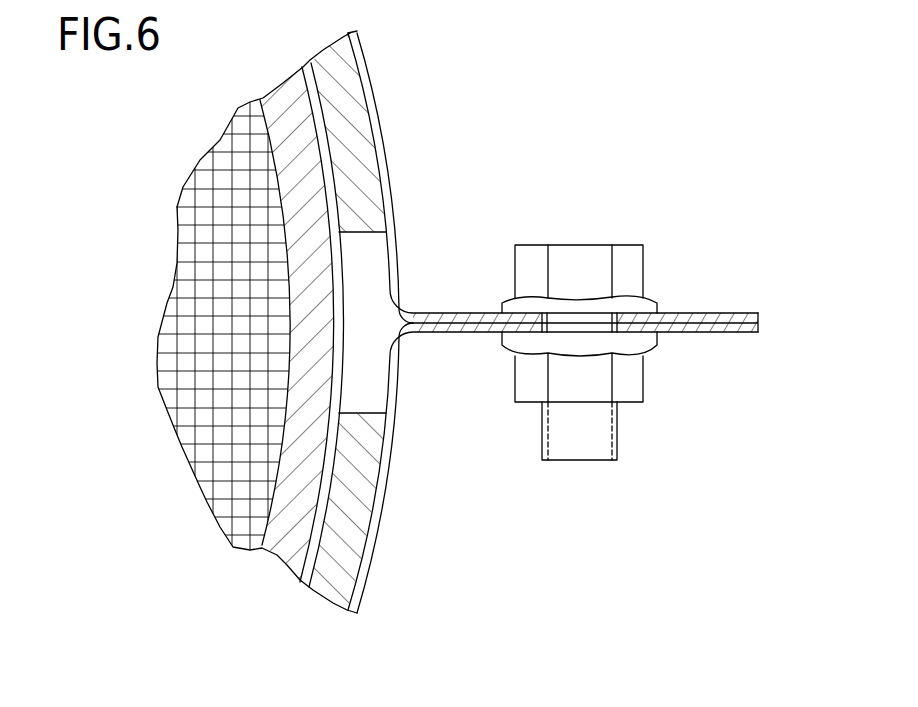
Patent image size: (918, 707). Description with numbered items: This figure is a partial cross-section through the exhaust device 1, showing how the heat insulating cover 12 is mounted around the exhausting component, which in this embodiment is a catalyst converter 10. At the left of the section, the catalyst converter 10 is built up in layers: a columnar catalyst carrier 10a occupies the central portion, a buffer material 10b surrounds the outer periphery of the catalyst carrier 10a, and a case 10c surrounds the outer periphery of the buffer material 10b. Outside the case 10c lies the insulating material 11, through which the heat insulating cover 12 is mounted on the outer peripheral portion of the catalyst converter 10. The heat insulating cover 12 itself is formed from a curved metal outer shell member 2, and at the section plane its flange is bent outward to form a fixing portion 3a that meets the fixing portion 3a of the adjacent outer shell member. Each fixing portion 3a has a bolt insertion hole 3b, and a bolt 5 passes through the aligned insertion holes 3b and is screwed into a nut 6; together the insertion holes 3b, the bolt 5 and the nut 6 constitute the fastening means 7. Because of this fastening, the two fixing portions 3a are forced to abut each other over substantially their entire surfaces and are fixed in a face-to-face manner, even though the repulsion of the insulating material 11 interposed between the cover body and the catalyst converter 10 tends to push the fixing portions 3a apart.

The exhaust device 1 is at (404, 218).
The outer shell member 2 is at (371, 98).
The fixing portion 3a is at (716, 310).
The bolt insertion hole 3b is at (618, 327).
The bolt 5 is at (562, 268).
The nut 6 is at (592, 387).
The fastening means 7 is at (628, 258).
The catalyst converter 10 is at (183, 392).
The catalyst carrier 10a is at (190, 315).
The buffer material 10b is at (292, 535).
The case 10c is at (310, 555).
The insulating material 11 is at (368, 160).
The heat insulating cover 12 is at (372, 48).